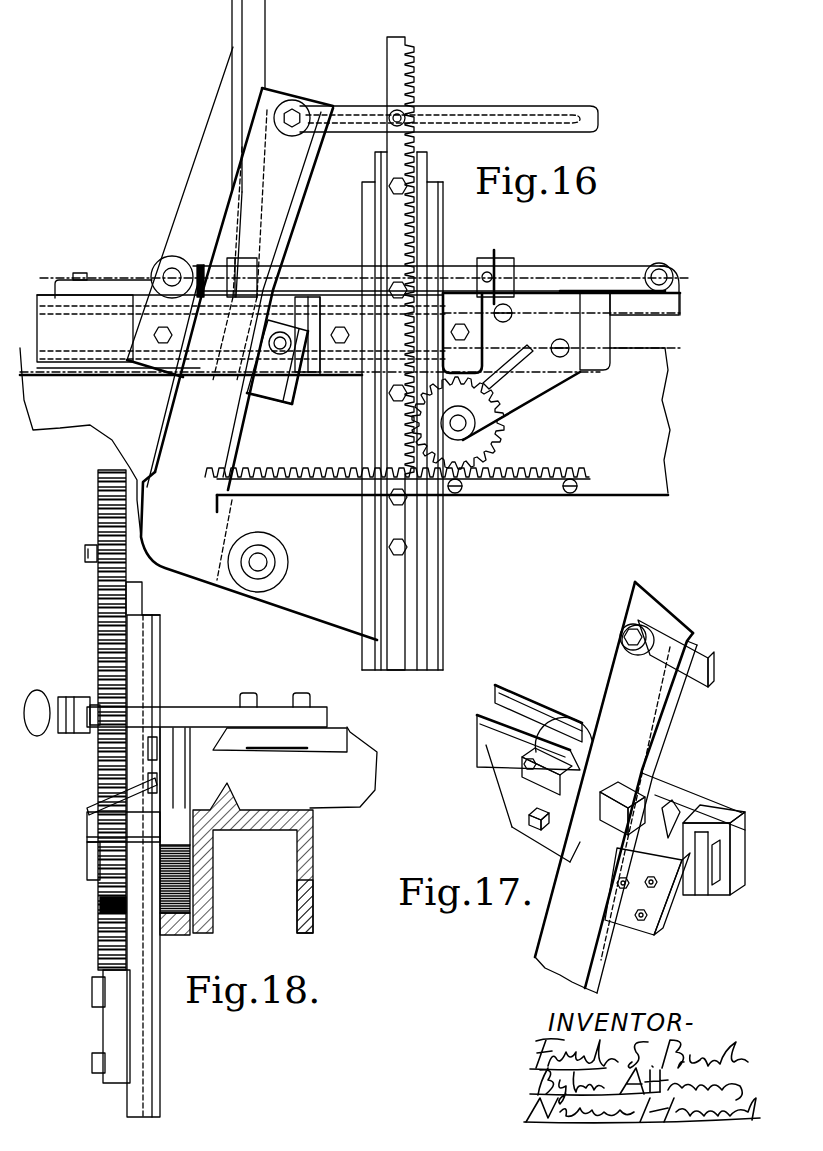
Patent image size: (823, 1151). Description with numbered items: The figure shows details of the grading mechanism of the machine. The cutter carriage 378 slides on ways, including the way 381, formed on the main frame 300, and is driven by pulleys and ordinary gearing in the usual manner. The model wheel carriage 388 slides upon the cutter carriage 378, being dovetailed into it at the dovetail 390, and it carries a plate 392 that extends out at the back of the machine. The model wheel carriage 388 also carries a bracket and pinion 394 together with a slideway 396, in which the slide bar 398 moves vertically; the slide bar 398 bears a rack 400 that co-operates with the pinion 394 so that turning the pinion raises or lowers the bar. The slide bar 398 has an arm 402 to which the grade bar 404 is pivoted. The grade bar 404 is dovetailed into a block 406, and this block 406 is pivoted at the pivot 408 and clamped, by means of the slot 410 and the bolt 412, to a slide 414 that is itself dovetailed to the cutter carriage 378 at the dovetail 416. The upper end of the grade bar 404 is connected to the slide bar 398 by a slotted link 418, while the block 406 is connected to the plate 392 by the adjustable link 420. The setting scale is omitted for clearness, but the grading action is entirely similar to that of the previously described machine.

In FIG. 18, the main frame 300 is at (315, 916).
In FIG. 16, the cutter carriage 378 is at (600, 336).
In FIG. 18, the cutter carriage 378 is at (348, 771).
In FIG. 17, the cutter carriage 378 is at (514, 712).
In FIG. 18, the way 381 is at (230, 800).
In FIG. 16, the model wheel carriage 388 is at (207, 130).
In FIG. 18, the dovetail 390 is at (322, 738).
In FIG. 16, the plate 392 is at (680, 283).
In FIG. 18, the plate 392 is at (218, 717).
In FIG. 16, the bracket and pinion 394 is at (462, 424).
In FIG. 18, the bracket and pinion 394 is at (183, 867).
In FIG. 16, the slideway 396 is at (432, 528).
In FIG. 18, the slideway 396 is at (153, 1030).
In FIG. 16, the slide bar 398 is at (427, 162).
In FIG. 18, the slide bar 398 is at (135, 598).
In FIG. 16, the rack 400 is at (416, 66).
In FIG. 18, the rack 400 is at (98, 618).
In FIG. 16, the arm 402 is at (290, 543).
In FIG. 16, the grade bar 404 is at (259, 364).
In FIG. 17, the grade bar 404 is at (616, 787).
In FIG. 16, the block 406 is at (145, 297).
In FIG. 17, the block 406 is at (667, 910).
In FIG. 16, the pivot 408 is at (160, 342).
In FIG. 17, the pivot 408 is at (529, 818).
In FIG. 17, the slot 410 is at (664, 806).
In FIG. 16, the bolt 412 is at (288, 380).
In FIG. 17, the bolt 412 is at (613, 880).
In FIG. 16, the slide 414 is at (133, 297).
In FIG. 17, the slide 414 is at (693, 813).
In FIG. 17, the dovetail 416 is at (733, 842).
In FIG. 16, the slotted link 418 is at (348, 118).
In FIG. 18, the slotted link 418 is at (95, 547).
In FIG. 17, the slotted link 418 is at (690, 663).
In FIG. 16, the adjustable link 420 is at (537, 267).
In FIG. 18, the adjustable link 420 is at (67, 737).
In FIG. 17, the adjustable link 420 is at (613, 812).